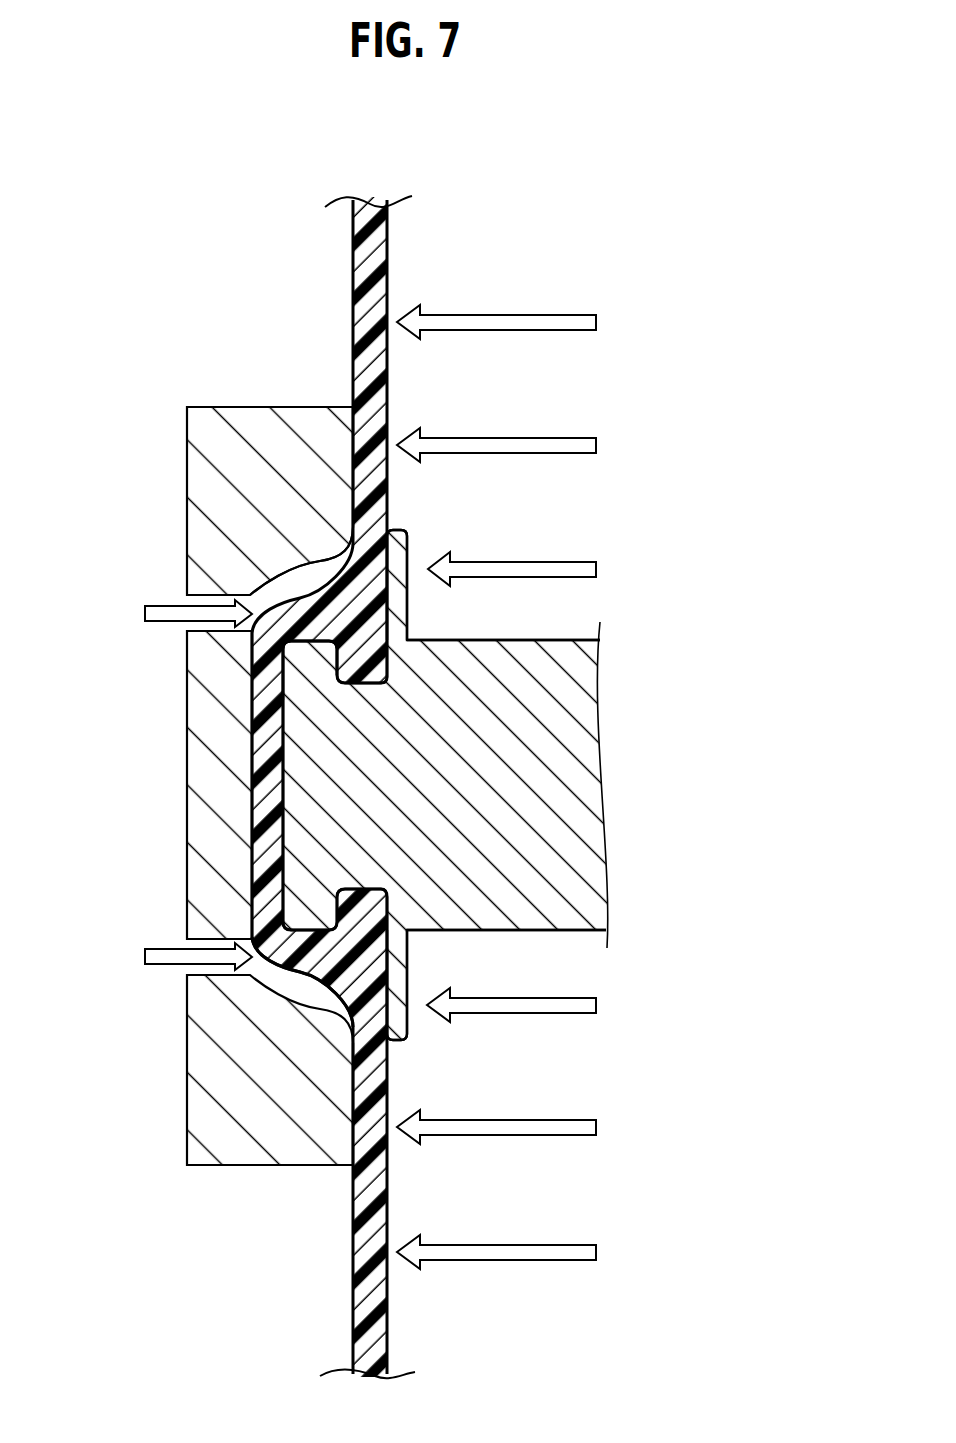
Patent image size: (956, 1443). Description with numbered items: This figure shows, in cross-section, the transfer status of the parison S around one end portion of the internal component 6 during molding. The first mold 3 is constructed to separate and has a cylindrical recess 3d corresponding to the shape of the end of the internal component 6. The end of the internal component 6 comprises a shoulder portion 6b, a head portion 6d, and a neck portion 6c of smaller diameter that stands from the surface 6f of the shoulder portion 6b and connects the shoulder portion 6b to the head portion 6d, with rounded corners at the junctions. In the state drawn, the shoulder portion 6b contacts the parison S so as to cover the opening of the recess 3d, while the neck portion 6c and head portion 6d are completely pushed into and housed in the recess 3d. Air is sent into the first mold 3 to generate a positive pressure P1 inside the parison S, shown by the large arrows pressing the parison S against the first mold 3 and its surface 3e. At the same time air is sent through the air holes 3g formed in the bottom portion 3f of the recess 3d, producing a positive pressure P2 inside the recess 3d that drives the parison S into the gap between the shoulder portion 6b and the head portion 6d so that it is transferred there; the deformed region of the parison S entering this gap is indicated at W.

The first mold 3 is at (238, 407).
The recess 3d is at (310, 582).
The side surface 3e is at (333, 547).
The bottom portion 3f is at (250, 838).
The air holes 3g is at (206, 629).
The internal component 6 is at (572, 639).
The shoulder portion 6b is at (397, 1042).
The neck portion 6c is at (363, 787).
The head portion 6d is at (310, 662).
The surface of the shoulder portion 6f is at (387, 565).
The parison S is at (387, 253).
The positive pressure P1 is at (522, 332).
The positive pressure P2 is at (157, 606).
The width W is at (290, 981).